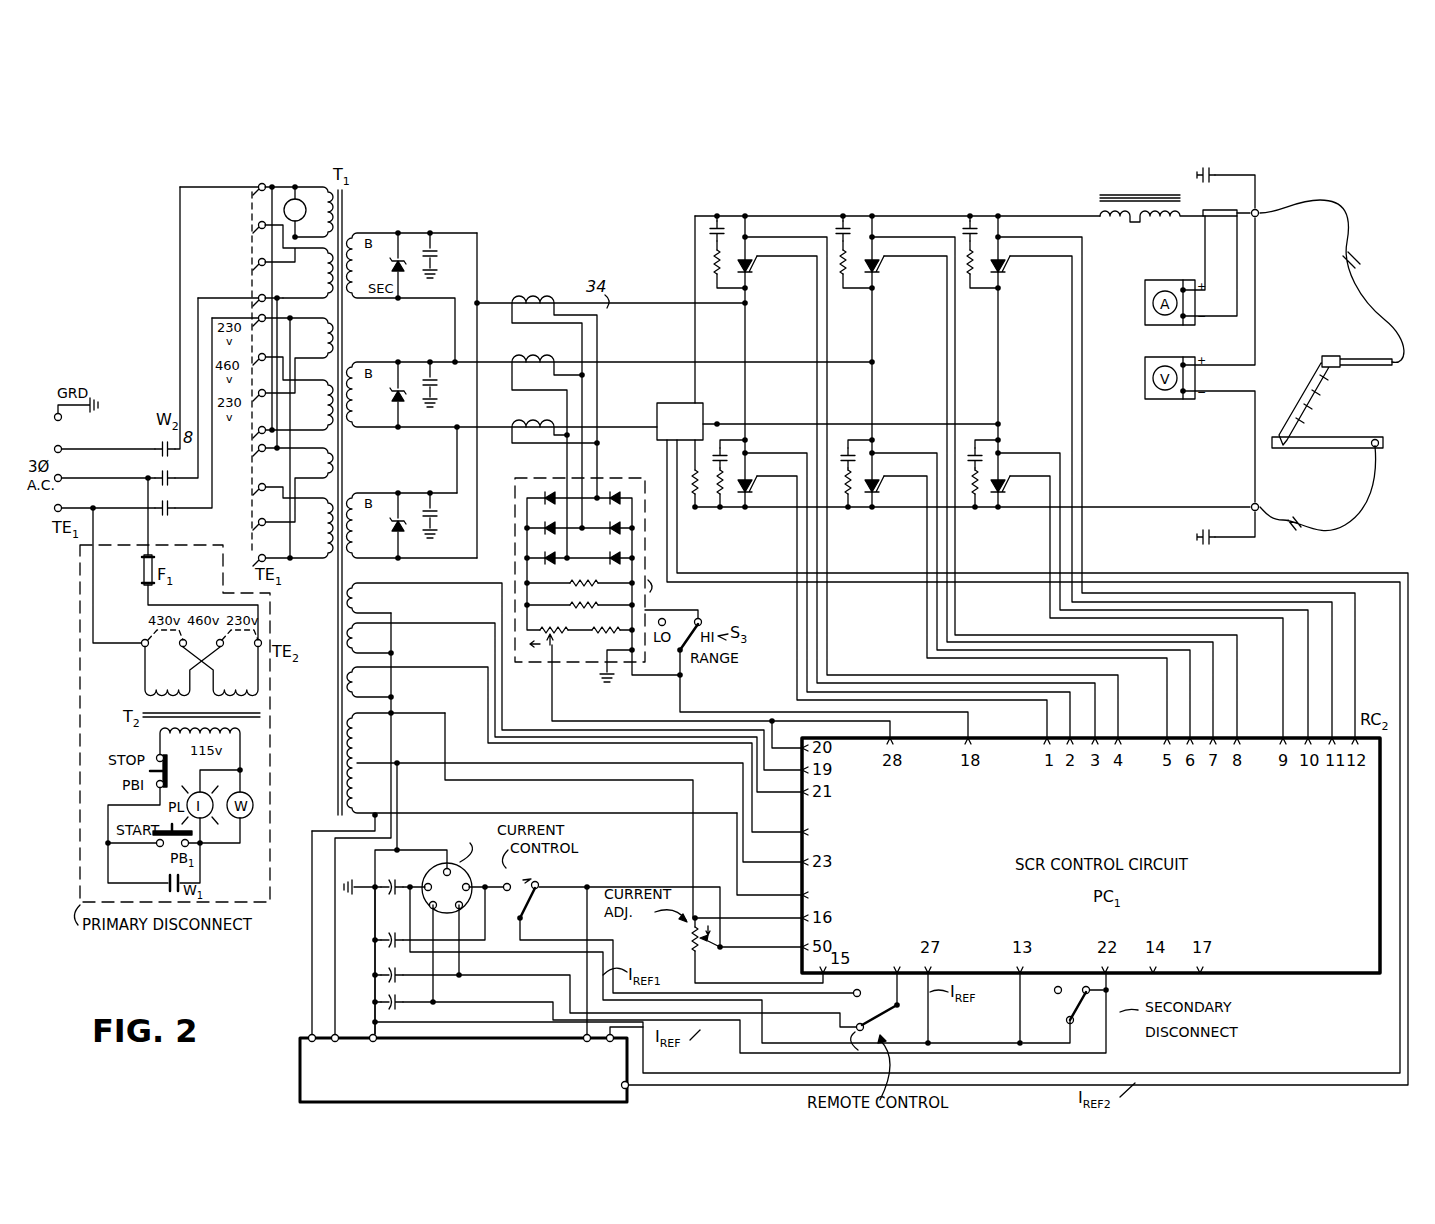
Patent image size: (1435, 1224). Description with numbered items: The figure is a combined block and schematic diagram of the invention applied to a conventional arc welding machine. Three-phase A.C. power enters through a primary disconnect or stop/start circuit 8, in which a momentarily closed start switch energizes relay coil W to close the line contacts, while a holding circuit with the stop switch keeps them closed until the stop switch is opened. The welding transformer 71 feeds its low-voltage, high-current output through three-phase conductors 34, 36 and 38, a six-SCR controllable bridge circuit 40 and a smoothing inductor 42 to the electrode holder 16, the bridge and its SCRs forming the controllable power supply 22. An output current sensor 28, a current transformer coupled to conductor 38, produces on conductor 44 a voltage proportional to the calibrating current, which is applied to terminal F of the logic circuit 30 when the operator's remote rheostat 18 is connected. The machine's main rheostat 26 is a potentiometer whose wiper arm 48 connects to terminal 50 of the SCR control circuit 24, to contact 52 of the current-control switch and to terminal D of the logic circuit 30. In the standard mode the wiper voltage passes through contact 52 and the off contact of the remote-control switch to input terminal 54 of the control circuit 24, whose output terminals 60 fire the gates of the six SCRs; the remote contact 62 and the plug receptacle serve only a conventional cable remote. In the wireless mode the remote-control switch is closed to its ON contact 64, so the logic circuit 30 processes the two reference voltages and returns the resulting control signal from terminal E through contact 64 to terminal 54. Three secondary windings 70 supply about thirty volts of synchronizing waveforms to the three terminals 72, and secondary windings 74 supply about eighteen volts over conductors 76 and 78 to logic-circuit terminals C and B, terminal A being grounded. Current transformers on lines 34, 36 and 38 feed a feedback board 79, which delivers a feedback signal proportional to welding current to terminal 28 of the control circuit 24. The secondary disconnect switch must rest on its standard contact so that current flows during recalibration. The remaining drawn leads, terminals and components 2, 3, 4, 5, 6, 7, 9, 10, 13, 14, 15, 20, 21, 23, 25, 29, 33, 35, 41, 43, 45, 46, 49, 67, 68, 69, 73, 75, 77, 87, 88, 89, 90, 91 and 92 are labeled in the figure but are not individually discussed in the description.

The terminal 2 is at (115, 862).
The terminal 3 is at (253, 837).
The terminal 4 is at (244, 751).
The input line 5 is at (121, 321).
The input line 6 is at (130, 391).
The input line 7 is at (137, 416).
The primary disconnect circuit 8 is at (82, 873).
The contactor contact 9 is at (188, 465).
The contactor contact 10 is at (200, 494).
The fuse line 13 is at (175, 560).
The electrode cable 14 is at (1345, 256).
The transformer winding 15 is at (182, 671).
The electrode holder 16 is at (1378, 368).
The remote rheostat 18 is at (1306, 392).
The workpiece / fan motor coil 20 is at (1356, 422).
The secondary line 21 is at (637, 414).
The controllable power supply 22 is at (572, 180).
The secondary line 23 is at (610, 385).
The SCR control circuit 24 is at (1352, 990).
The negative output line 25 is at (972, 693).
The main rheostat 26 is at (696, 957).
The output current sensor 28 is at (692, 403).
The shunt 29 is at (1138, 185).
The logic circuit 30 is at (300, 1075).
The primary winding 33 is at (299, 261).
The three-phase conductor 34 is at (299, 355).
The primary winding 35 is at (299, 393).
The three-phase conductor 36 is at (617, 368).
The three-phase conductor 38 is at (598, 428).
The six-SCR controllable bridge circuit 40 is at (1035, 594).
The control winding line 41 is at (502, 864).
The smoothing inductor 42 is at (545, 912).
The control winding line 43 is at (875, 756).
The conductor 44 is at (892, 573).
The line 45 is at (778, 964).
The remote connector 46 is at (505, 892).
The wiper arm 48 is at (712, 948).
The switch contact 49 is at (1086, 1012).
The terminal 50 is at (974, 1009).
The contact 52 is at (542, 890).
The input terminal 54 is at (898, 971).
The output terminals 60 is at (1365, 772).
The RMT contact 62 is at (673, 951).
The ON contact 64 is at (868, 1021).
The sync winding 67 is at (574, 666).
The sync winding 68 is at (574, 693).
The sync winding 69 is at (574, 736).
The secondary windings 70 is at (568, 798).
The welding transformer 71 is at (544, 403).
The terminals 72 is at (823, 794).
The current transformer secondary 73 is at (544, 428).
The secondary windings 74 is at (346, 772).
The feedback resistors 75 is at (566, 594).
The conductor 76 is at (312, 897).
The feedback potentiometer 77 is at (556, 633).
The conductor 78 is at (335, 925).
The feedback board 79 is at (648, 579).
The line 87 is at (754, 986).
The line 88 is at (629, 1001).
The CT4 output line 89 is at (656, 554).
The CT4 output line 90 is at (1018, 762).
The resistor 91 is at (687, 480).
The line 92 is at (852, 415).